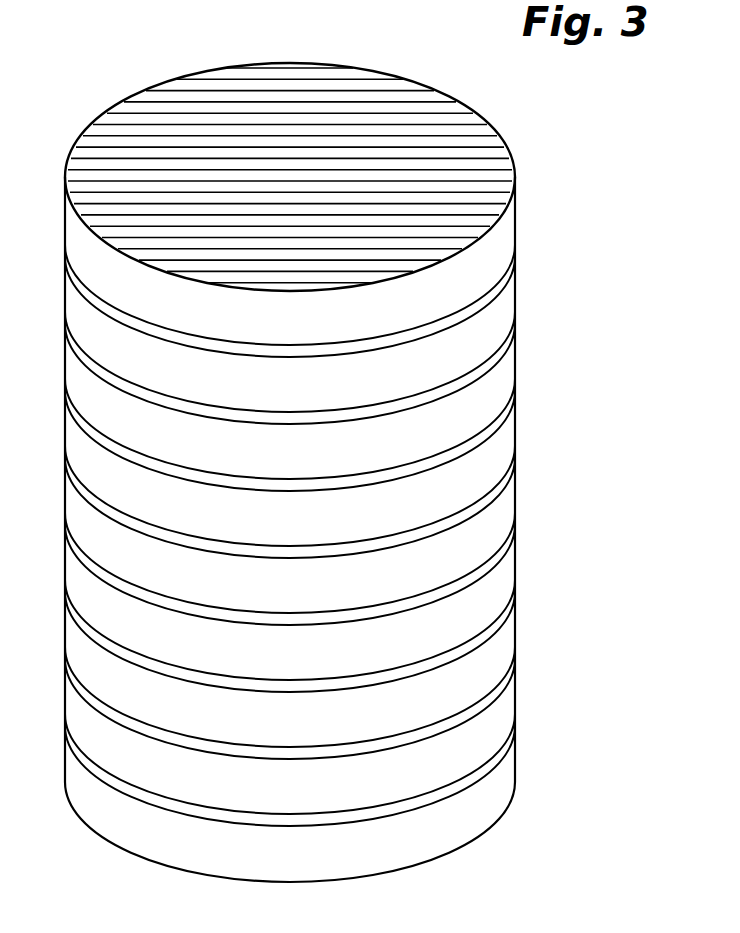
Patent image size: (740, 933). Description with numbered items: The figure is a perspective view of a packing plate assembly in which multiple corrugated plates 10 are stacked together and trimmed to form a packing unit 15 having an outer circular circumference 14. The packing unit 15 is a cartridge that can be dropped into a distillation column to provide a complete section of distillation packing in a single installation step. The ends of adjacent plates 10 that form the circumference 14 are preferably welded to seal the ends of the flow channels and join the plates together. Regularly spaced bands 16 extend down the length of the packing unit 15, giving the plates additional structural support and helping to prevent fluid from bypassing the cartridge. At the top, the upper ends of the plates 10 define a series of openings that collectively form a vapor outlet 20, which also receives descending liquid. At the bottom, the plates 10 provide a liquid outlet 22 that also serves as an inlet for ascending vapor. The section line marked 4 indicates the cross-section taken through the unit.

The plates 10 is at (439, 174).
The vapor outlet 20 is at (343, 98).
The bands 16 is at (502, 277).
The outer circular circumference 14 is at (517, 294).
The packing unit 15 is at (526, 491).
The liquid outlet 22 is at (127, 854).
The section line 4- 4 is at (468, 460).